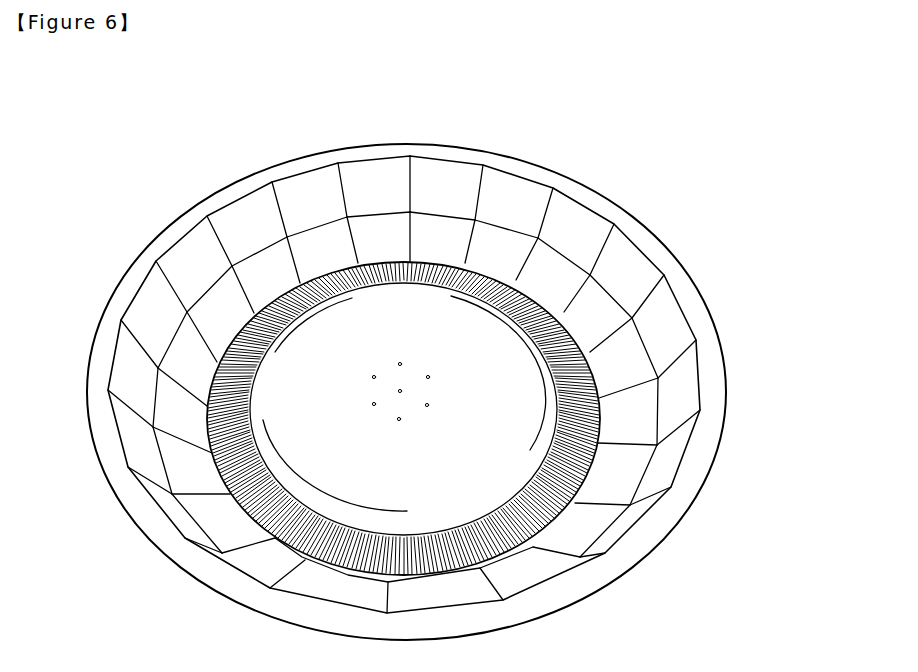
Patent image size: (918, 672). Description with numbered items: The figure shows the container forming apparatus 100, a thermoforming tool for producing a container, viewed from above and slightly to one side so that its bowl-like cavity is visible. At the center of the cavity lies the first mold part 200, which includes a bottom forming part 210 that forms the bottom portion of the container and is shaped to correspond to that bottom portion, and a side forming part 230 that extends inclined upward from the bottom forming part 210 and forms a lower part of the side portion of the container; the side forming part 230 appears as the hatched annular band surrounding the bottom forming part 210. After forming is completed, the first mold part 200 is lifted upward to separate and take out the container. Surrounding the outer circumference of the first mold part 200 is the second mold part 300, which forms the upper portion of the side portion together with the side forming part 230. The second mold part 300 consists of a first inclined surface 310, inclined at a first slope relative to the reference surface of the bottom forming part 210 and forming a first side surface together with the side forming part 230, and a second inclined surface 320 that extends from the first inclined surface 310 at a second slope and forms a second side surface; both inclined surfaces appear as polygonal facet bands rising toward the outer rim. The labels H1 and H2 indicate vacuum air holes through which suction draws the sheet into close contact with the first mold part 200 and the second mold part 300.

The container forming apparatus 100 is at (246, 90).
The first mold part 200 is at (524, 418).
The bottom forming part 210 is at (590, 415).
The side forming part 230 is at (585, 482).
The second mold part 300 is at (456, 384).
The first inclined surface 310 is at (597, 307).
The second inclined surface 320 is at (577, 229).
The vacuum air hole H1 is at (330, 408).
The vacuum air hole H2 is at (160, 368).